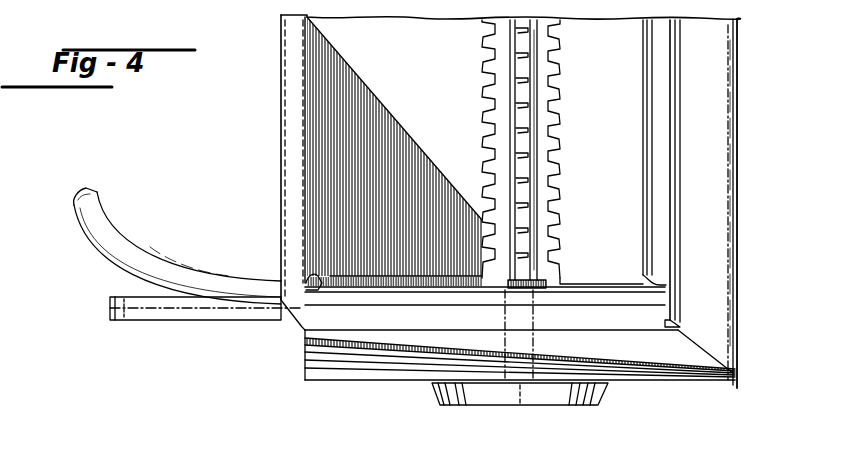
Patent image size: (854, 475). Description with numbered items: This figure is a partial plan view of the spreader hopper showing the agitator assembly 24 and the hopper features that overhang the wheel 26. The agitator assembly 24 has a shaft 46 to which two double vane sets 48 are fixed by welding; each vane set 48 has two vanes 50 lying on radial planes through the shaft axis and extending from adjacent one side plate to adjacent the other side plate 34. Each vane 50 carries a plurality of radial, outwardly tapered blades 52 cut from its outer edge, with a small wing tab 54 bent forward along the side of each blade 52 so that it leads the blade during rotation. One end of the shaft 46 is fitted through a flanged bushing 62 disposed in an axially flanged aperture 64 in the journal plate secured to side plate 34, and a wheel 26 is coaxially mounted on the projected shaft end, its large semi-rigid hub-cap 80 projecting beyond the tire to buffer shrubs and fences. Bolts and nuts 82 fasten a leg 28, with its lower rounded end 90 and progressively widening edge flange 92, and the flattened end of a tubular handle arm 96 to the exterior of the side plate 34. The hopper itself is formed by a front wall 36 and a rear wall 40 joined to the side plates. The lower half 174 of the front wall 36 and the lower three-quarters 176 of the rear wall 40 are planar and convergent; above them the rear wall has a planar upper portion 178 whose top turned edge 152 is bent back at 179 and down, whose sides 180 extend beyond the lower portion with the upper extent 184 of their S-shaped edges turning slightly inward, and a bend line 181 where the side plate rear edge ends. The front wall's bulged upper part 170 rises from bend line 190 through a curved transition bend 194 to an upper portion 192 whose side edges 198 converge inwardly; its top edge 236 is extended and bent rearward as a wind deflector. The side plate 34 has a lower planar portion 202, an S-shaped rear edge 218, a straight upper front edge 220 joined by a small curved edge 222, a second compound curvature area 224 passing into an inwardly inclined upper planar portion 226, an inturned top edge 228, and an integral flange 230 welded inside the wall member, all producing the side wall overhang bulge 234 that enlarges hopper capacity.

The agitator assembly 24 is at (461, 151).
The wheel 26 is at (386, 382).
The leg 28 is at (217, 322).
The side plate 34 is at (395, 322).
The front wall 36 is at (705, 62).
The rear wall 40 is at (310, 118).
The shaft 46 is at (535, 392).
The double vane set 48 is at (513, 70).
The vane 50 is at (515, 90).
The blade 52 is at (515, 108).
The wing tab 54 is at (490, 157).
The flanged bushing 62 is at (545, 285).
The axially flanged aperture 64 is at (525, 292).
The hub-cap 80 is at (598, 400).
The bolts and nuts 82 is at (384, 292).
The lower rounded end 90 is at (116, 322).
The edge flange 92 is at (174, 322).
The tubular arm 96 is at (128, 246).
The top turned edge 152 is at (288, 70).
The bulged upper part 170 is at (744, 107).
The lower half of front wall 174 is at (626, 100).
The lower three-quarters of rear wall 176 is at (413, 76).
The upper portion of rear wall 178 is at (305, 34).
The bend 179 is at (308, 166).
The sides of rear wall upper portion 180 is at (308, 283).
The rear wall bend line 181 is at (332, 200).
The upper extent of edge 184 is at (302, 330).
The bend line 190 is at (645, 165).
The upper portion of front wall 192 is at (718, 157).
The transition bend 194 is at (738, 176).
The side edges of front wall upper portion 198 is at (718, 356).
The lower planar portion 202 is at (460, 292).
The S-shaped edge portion 218 is at (305, 344).
The upper edge portion of side plate front edge 220 is at (726, 352).
The curved edge portion 222 is at (735, 372).
The second compound curvature area 224 is at (674, 366).
The upper planar portion 226 is at (655, 358).
The top edge 228 is at (435, 322).
The integral flange 230 is at (602, 278).
The overhang bulge 234 is at (618, 376).
The top edge of front wall 236 is at (668, 112).